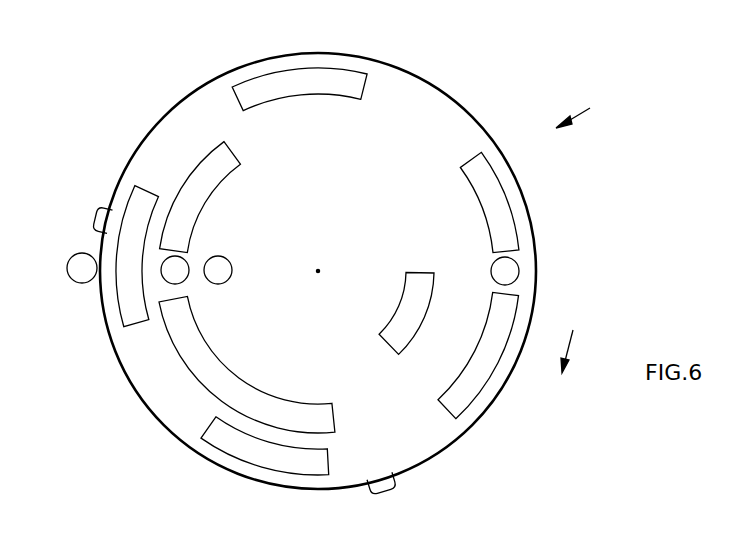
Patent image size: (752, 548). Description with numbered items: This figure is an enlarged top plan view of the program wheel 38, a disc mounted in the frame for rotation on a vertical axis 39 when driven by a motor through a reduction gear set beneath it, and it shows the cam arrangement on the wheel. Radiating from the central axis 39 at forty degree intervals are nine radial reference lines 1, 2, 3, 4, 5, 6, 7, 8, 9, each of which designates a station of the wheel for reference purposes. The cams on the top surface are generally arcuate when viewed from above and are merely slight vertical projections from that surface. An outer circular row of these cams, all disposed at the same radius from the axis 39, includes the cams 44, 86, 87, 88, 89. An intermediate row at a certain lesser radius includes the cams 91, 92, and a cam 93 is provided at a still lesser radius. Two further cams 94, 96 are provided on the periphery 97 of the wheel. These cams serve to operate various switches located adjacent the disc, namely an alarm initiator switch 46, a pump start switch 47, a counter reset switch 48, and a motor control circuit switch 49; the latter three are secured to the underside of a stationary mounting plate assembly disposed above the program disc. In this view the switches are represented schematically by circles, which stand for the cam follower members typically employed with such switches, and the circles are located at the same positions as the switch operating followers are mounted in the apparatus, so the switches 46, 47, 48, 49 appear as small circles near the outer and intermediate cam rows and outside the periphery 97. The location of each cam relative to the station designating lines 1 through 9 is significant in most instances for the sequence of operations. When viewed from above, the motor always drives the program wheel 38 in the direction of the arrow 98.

The radial reference line 1 is at (318, 271).
The radial reference line 2 is at (318, 271).
The radial reference line 3 is at (318, 271).
The radial reference line 4 is at (318, 271).
The radial reference line 5 is at (318, 271).
The radial reference line 6 is at (318, 271).
The radial reference line 7 is at (318, 271).
The radial reference line 8 is at (318, 271).
The radial reference line 9 is at (318, 271).
The program wheel 38 is at (587, 112).
The vertical axis 39 is at (318, 271).
The cam 44 is at (283, 84).
The alarm initiator switch 46 is at (70, 259).
The pump start switch 47 is at (187, 260).
The counter reset switch 48 is at (224, 286).
The motor control circuit switch 49 is at (518, 263).
The cam 86 is at (131, 297).
The cam 87 is at (307, 465).
The cam 88 is at (480, 383).
The cam 89 is at (500, 226).
The cam 91 is at (215, 378).
The cam 92 is at (193, 185).
The cam 93 is at (421, 314).
The cam 94 is at (387, 487).
The cam 96 is at (98, 218).
The periphery 97 is at (531, 307).
The arrow 98 is at (572, 348).